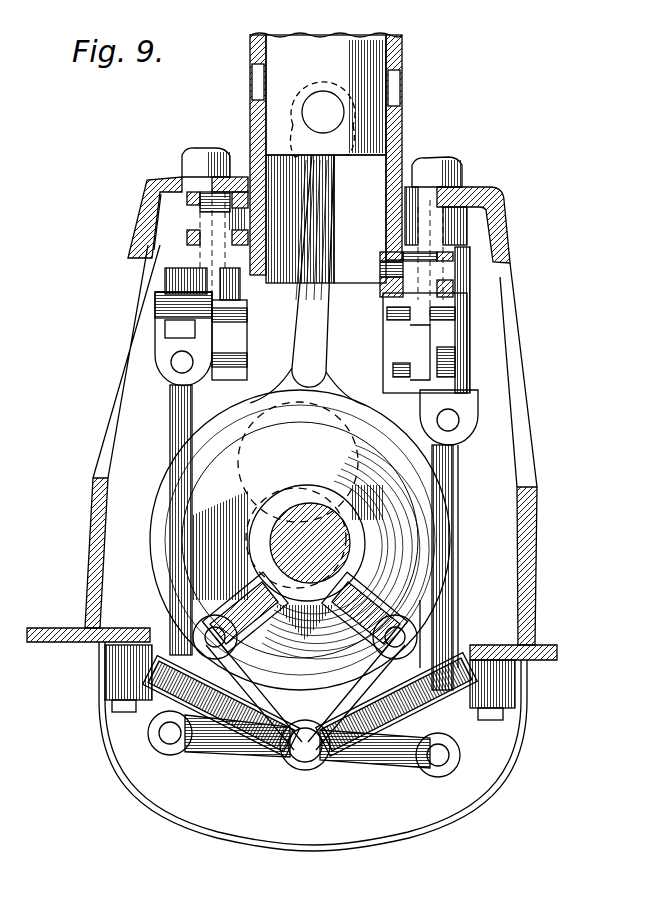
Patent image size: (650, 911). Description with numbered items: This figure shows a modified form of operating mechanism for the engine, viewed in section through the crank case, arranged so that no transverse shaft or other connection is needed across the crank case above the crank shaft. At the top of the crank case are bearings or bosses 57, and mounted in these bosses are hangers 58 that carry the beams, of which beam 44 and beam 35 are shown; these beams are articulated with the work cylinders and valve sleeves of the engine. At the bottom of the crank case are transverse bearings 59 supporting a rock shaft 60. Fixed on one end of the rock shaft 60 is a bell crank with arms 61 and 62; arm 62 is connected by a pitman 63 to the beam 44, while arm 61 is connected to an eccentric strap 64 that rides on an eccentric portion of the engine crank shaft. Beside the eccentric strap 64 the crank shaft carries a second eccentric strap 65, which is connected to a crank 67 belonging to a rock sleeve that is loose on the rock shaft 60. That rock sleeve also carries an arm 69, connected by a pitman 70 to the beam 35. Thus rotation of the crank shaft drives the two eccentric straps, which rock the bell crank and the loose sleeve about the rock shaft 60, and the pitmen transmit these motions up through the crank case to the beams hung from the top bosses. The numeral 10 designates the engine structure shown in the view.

The flywheel disc 10 is at (290, 546).
The beam 35 is at (401, 369).
The beam 44 is at (225, 346).
The bearings or bosses 57 is at (178, 238).
The hangers 58 is at (183, 283).
The transverse bearings 59 is at (250, 758).
The rock shaft 60 is at (308, 762).
The bell crank arm 61 is at (150, 727).
The bell crank arm 62 is at (208, 752).
The pitman 63 is at (182, 432).
The eccentric strap 64 is at (362, 546).
The eccentric strap 65 is at (387, 612).
The crank 67 is at (388, 752).
The rock sleeve arm 69 is at (360, 764).
The pitmen 70 is at (454, 512).